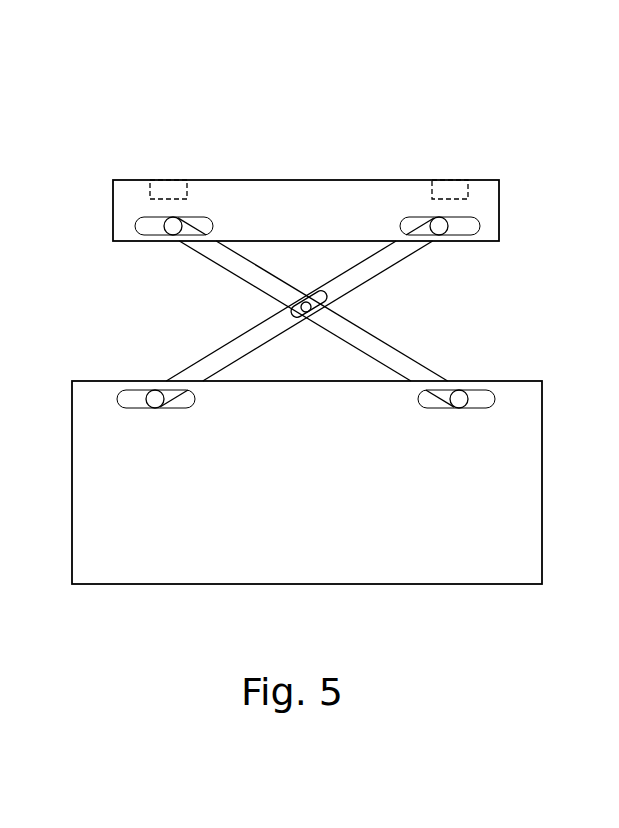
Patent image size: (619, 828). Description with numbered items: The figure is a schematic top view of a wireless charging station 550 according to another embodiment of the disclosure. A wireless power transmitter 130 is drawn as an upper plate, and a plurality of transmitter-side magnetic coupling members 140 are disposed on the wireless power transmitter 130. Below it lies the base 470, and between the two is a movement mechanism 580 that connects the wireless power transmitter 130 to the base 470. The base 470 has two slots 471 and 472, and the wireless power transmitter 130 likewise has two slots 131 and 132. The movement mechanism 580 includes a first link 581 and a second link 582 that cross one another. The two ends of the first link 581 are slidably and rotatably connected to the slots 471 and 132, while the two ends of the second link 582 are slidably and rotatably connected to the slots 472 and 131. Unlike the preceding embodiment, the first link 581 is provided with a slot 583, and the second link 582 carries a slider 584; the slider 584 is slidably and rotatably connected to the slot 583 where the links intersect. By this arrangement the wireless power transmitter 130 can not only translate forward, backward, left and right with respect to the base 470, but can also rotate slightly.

The wireless charging station 550 is at (17, 55).
The wireless power transmitter 130 is at (287, 190).
The transmitter-side magnetic coupling members 140 is at (170, 190).
The slot 131 is at (143, 224).
The slot 132 is at (474, 224).
The base 470 is at (84, 512).
The slot 471 is at (124, 397).
The slot 472 is at (489, 397).
The movement mechanism 580 is at (364, 312).
The first link 581 is at (355, 283).
The second link 582 is at (353, 338).
The slot 583 is at (290, 318).
The slider 584 is at (293, 307).